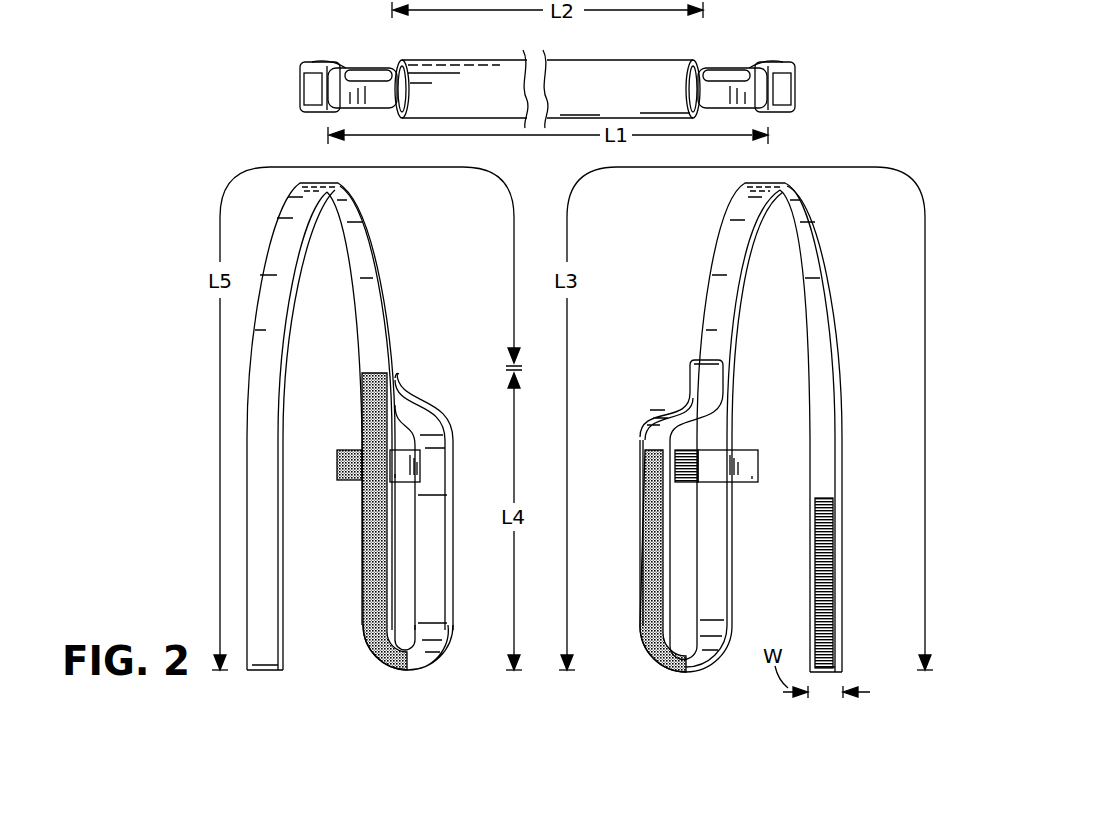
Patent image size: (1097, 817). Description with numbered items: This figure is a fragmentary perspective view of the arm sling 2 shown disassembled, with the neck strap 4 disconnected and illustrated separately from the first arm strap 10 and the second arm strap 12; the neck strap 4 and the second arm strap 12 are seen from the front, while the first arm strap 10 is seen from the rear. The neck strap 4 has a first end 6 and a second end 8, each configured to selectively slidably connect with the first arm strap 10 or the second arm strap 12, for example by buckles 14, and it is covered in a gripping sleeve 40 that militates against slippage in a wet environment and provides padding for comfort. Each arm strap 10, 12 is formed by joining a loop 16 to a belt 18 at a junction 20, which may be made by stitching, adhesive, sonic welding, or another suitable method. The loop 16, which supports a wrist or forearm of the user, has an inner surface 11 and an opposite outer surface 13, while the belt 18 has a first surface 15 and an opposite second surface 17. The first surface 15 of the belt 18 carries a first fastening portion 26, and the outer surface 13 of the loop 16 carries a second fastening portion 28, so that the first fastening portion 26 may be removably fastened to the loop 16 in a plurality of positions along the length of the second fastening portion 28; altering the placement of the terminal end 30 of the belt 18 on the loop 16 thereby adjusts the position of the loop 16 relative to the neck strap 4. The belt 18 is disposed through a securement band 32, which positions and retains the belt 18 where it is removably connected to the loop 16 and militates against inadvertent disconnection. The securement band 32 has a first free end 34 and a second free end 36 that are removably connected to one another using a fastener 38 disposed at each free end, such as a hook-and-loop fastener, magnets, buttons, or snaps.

The arm sling 2 is at (196, 220).
The neck strap 4 is at (380, 78).
The first end 6 is at (814, 101).
The second end 8 is at (277, 85).
The first arm strap 10 is at (674, 322).
The inner surface 11 is at (444, 571).
The second arm strap 12 is at (412, 303).
The outer surface 13 is at (362, 592).
The buckle 14 is at (324, 62).
The first surface 15 is at (383, 246).
The loop 16 is at (440, 457).
The second surface 17 is at (290, 632).
The belt 18 is at (255, 392).
The junction 20 is at (413, 373).
The first fastening portion 26 is at (835, 625).
The second fastening portion 28 is at (388, 668).
The terminal end 30 is at (267, 692).
The securement band 32 is at (546, 467).
The first free end 34 is at (337, 481).
The second free end 36 is at (422, 473).
The fastener 38 is at (348, 496).
The gripping sleeve 40 is at (497, 72).